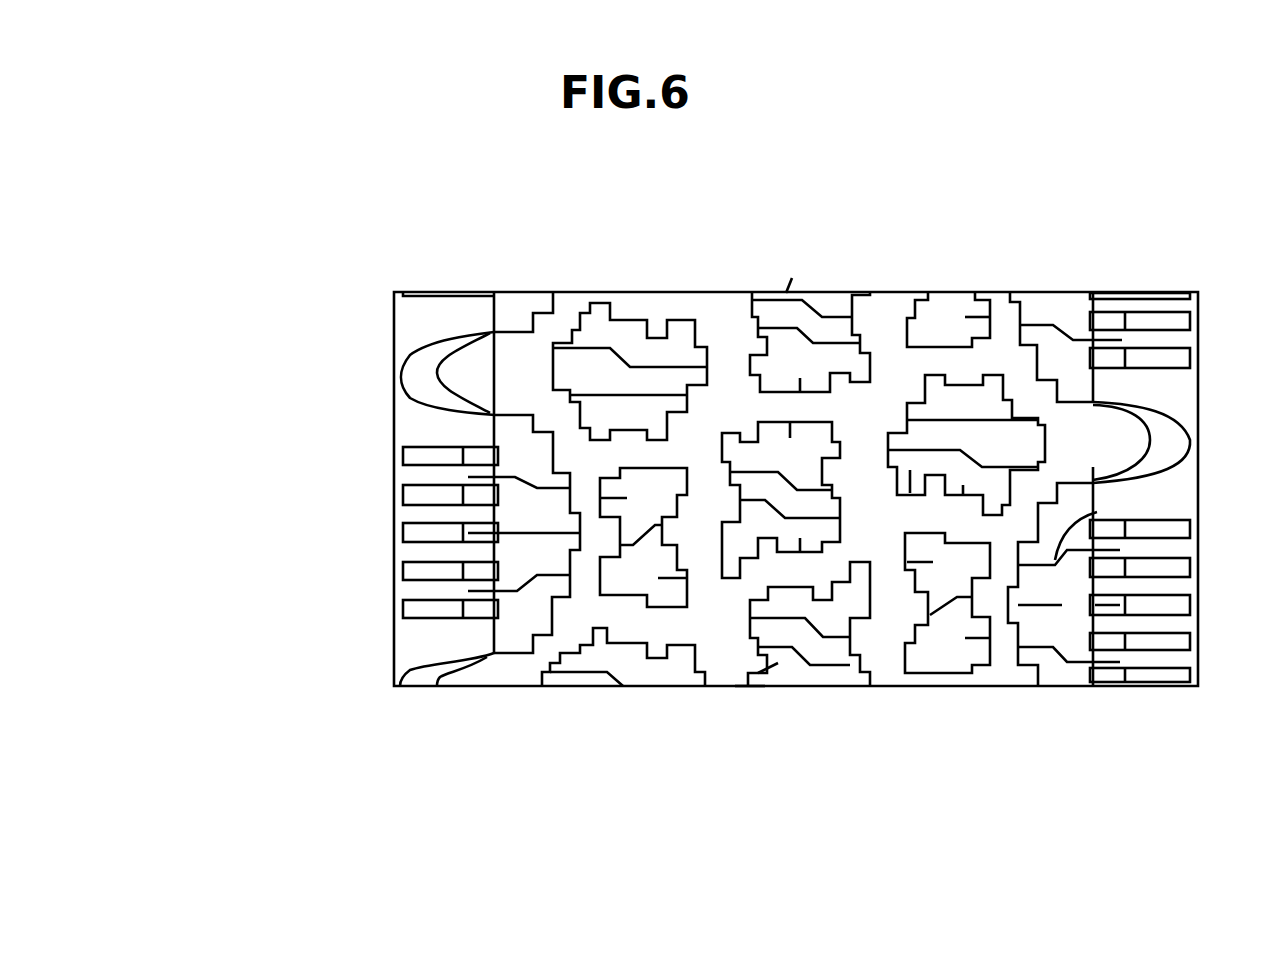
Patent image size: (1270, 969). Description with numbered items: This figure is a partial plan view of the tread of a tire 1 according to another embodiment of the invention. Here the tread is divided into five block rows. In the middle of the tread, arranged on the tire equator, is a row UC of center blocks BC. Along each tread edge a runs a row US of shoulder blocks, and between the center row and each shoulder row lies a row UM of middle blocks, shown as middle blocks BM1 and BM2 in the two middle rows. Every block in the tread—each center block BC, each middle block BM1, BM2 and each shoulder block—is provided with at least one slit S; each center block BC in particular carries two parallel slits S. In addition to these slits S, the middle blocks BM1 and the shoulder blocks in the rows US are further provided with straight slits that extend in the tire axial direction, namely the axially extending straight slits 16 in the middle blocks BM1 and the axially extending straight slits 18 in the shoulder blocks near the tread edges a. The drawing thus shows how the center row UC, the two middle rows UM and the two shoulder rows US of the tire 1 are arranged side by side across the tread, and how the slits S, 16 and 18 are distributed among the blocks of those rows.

The tire 1 is at (880, 228).
The axially extending straight slit 16 is at (952, 418).
The axially extending straight slit 18 is at (1062, 605).
The middle block BM1 is at (935, 368).
The middle block BM2 is at (957, 684).
The slit S is at (1005, 467).
The row of center blocks UC is at (780, 690).
The row of middle blocks UM is at (628, 693).
The row of shoulder blocks US is at (513, 660).
The center block BC is at (750, 686).
The tread edge a is at (494, 633).